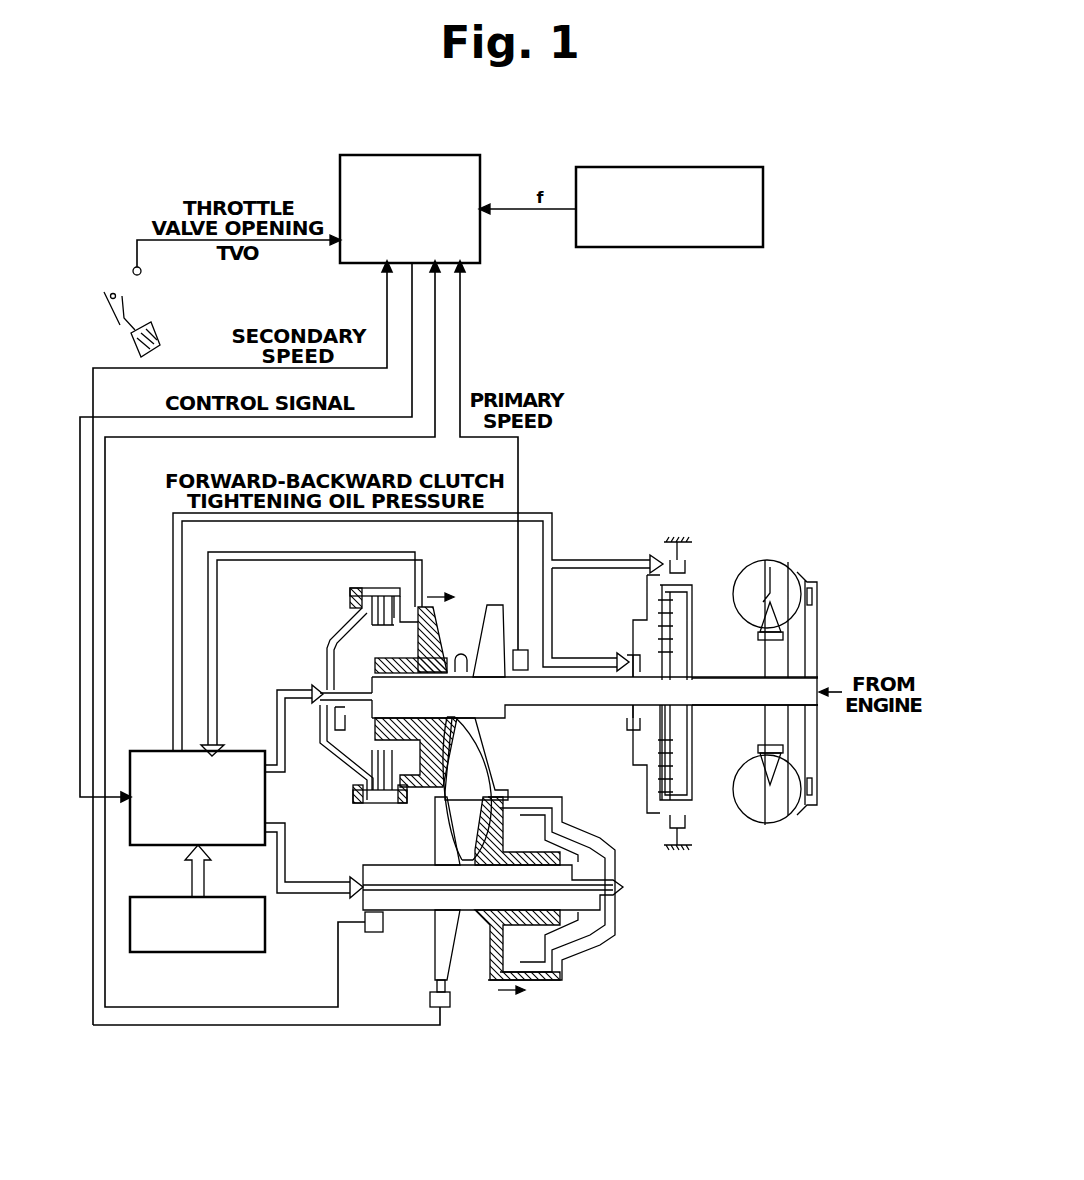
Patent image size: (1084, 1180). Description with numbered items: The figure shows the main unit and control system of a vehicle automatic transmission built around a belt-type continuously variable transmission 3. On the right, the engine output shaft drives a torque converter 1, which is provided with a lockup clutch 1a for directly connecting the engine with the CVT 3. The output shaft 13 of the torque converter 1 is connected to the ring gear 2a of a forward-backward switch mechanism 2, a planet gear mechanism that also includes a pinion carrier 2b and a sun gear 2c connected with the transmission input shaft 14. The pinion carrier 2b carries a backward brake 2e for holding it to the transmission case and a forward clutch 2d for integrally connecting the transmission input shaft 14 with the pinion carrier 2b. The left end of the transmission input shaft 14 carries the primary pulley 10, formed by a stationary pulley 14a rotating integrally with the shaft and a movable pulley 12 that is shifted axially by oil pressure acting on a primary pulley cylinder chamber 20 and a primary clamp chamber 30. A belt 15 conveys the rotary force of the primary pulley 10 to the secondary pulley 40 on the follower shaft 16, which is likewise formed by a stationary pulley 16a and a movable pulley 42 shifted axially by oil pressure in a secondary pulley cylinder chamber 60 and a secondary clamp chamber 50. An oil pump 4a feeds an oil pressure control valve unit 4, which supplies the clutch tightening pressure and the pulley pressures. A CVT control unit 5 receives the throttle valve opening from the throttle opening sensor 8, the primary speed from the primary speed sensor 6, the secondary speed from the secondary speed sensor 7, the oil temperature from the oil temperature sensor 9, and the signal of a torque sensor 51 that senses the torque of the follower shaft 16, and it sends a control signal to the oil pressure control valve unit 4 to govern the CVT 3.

The torque converter 1 is at (808, 664).
The lockup clutch 1a is at (815, 748).
The forward-backward switch mechanism 2 is at (663, 701).
The ring gear 2a is at (675, 588).
The pinion carrier 2b is at (663, 628).
The sun gear 2c is at (668, 648).
The forward clutch 2d is at (626, 723).
The backward brake 2e is at (685, 550).
The belt-type continuously variable transmission 3 is at (539, 832).
The oil pressure control valve unit 4 is at (150, 751).
The oil pump 4a is at (215, 955).
The CVT control unit 5 is at (405, 155).
The primary speed sensor 6 is at (522, 650).
The secondary speed sensor 7 is at (444, 1008).
The throttle opening sensor 8 is at (133, 269).
The oil temperature sensor 9 is at (708, 167).
The primary pulley 10 is at (339, 718).
The movable pulley 12 is at (440, 640).
The output shaft 13 is at (727, 700).
The transmission input shaft 14 is at (546, 704).
The stationary pulley 14a is at (494, 605).
The belt 15 is at (472, 775).
The follower shaft 16 is at (616, 889).
The stationary pulley 16a is at (435, 836).
The primary pulley cylinder chamber 20 is at (398, 642).
The primary clamp chamber 30 is at (345, 652).
The secondary pulley 40 is at (519, 894).
The movable pulley 42 is at (488, 968).
The secondary clamp chamber 50 is at (562, 812).
The torque sensor 51 is at (373, 933).
The secondary pulley cylinder chamber 60 is at (577, 926).